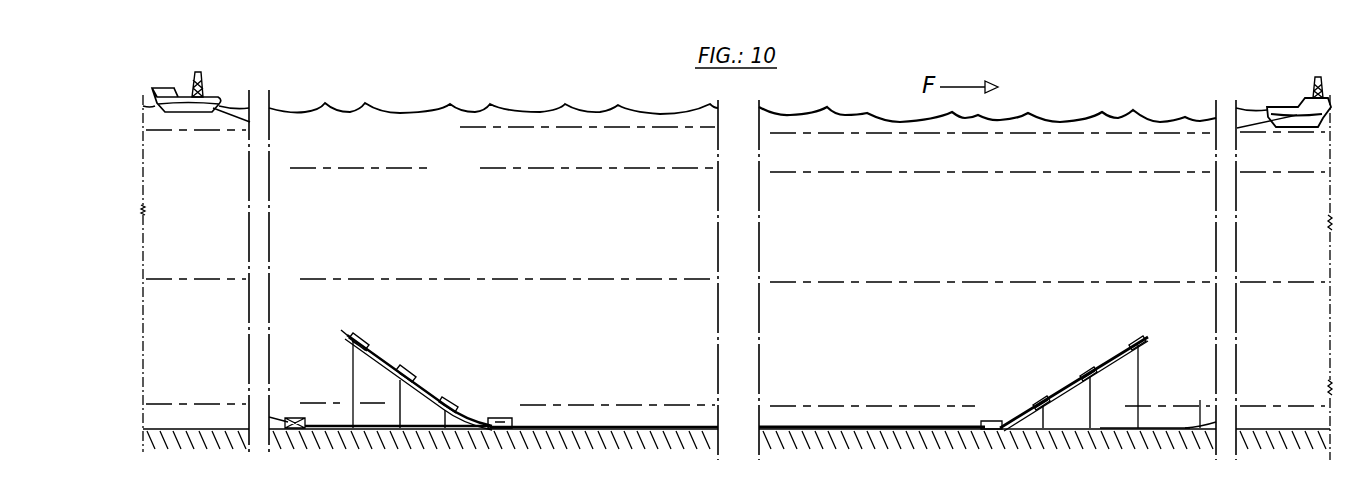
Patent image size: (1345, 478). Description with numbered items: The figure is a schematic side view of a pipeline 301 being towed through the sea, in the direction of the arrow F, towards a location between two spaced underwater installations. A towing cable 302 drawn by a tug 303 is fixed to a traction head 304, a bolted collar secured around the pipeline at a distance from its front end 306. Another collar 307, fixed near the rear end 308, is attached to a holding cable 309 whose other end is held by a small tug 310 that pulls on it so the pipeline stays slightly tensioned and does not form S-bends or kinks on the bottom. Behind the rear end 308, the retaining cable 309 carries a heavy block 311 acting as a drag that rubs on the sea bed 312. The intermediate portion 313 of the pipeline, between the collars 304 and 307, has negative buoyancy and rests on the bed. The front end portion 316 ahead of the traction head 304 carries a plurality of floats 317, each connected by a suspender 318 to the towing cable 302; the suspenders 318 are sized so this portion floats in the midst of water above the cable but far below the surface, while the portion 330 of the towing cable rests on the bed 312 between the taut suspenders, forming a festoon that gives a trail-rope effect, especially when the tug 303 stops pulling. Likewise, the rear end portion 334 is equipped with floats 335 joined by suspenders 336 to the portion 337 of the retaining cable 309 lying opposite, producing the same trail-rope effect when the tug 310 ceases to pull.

The pipeline 301 is at (900, 418).
The towing cable 302 is at (1250, 125).
The tug 303 is at (1297, 92).
The traction head 304 is at (989, 421).
The front end 306 is at (1172, 333).
The collar 307 is at (498, 418).
The rear end 308 is at (338, 328).
The holding cable 309 is at (215, 123).
The small tug 310 is at (221, 87).
The heavy block 311 is at (293, 418).
The sea bed 312 is at (1280, 428).
The intermediate portion 313 is at (803, 428).
The front end portion 316 is at (1061, 392).
The floats 317 is at (1091, 368).
The suspenders 318 is at (1090, 412).
The portion of the towing cable 330 is at (1110, 431).
The rear end portion 334 is at (427, 394).
The floats 335 is at (406, 372).
The suspenders 336 is at (353, 367).
The portion of the retaining cable 337 is at (375, 432).